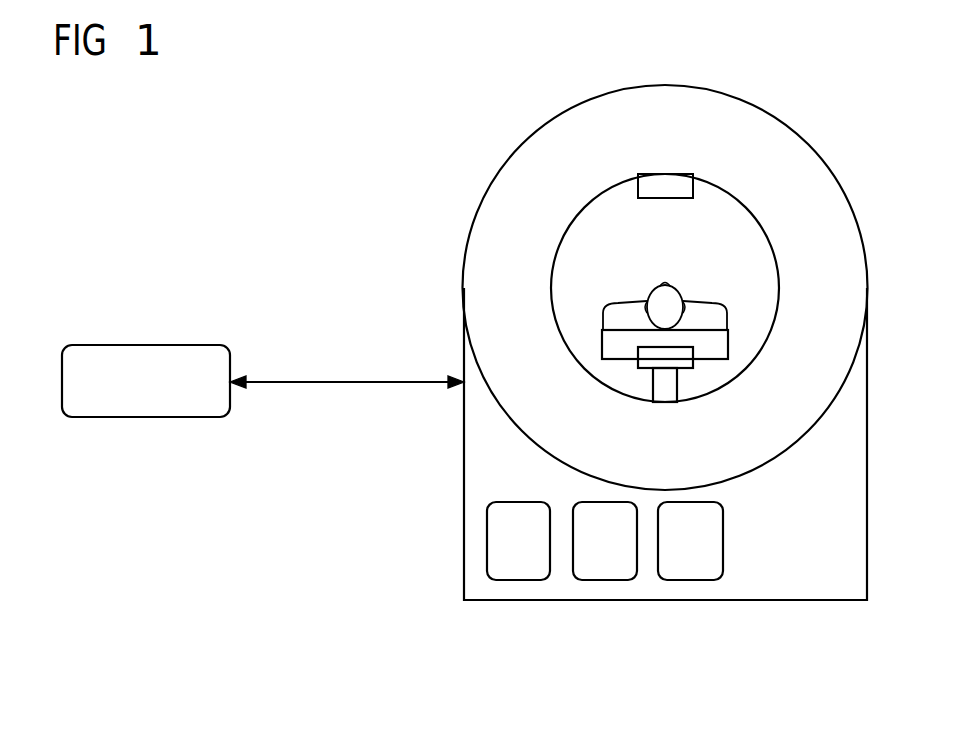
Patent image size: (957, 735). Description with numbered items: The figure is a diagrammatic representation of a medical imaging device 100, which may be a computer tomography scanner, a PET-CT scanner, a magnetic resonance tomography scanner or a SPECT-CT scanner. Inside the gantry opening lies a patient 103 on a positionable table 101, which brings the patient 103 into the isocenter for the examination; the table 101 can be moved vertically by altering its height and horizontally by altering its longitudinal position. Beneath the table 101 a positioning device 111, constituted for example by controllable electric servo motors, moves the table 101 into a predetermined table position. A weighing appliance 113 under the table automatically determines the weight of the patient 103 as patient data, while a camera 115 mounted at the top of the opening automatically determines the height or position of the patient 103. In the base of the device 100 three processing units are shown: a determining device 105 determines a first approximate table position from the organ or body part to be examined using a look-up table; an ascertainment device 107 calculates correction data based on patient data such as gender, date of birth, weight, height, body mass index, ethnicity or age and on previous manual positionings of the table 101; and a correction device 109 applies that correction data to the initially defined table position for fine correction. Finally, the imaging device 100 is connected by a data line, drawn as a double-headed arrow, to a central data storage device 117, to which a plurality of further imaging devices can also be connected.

The medical imaging device 100 is at (303, 138).
The positionable table 101 is at (715, 343).
The patient 103 is at (703, 315).
The determining device 105 is at (522, 567).
The ascertainment device 107 is at (605, 560).
The correction device 109 is at (692, 560).
The positioning device 111 is at (668, 387).
The weighing appliance 113 is at (652, 357).
The camera 115 is at (667, 187).
The central data storage device 117 is at (137, 395).